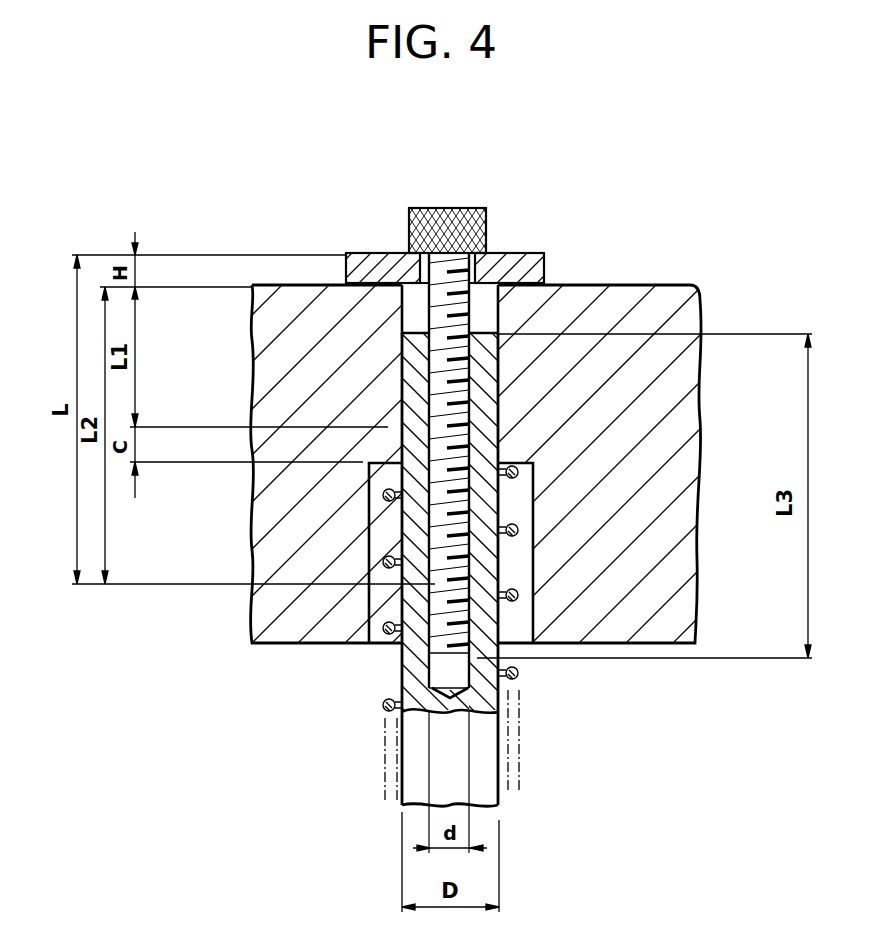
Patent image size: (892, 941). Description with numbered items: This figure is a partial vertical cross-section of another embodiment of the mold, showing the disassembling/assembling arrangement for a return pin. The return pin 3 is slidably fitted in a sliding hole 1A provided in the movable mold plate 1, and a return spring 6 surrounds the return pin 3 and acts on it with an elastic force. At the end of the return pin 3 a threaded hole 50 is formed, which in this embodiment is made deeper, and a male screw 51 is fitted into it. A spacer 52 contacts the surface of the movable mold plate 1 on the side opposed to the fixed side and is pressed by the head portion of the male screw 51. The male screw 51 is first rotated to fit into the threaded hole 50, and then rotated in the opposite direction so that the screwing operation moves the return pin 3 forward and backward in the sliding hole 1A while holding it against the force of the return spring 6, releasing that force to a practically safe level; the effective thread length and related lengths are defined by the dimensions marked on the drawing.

The movable mold plate 1 is at (678, 447).
The sliding hole 1A is at (408, 292).
The return pin 3 is at (422, 745).
The return spring 6 is at (518, 676).
The threaded hole 50 is at (432, 640).
The male screw 51 is at (487, 228).
The spacer 52 is at (547, 258).